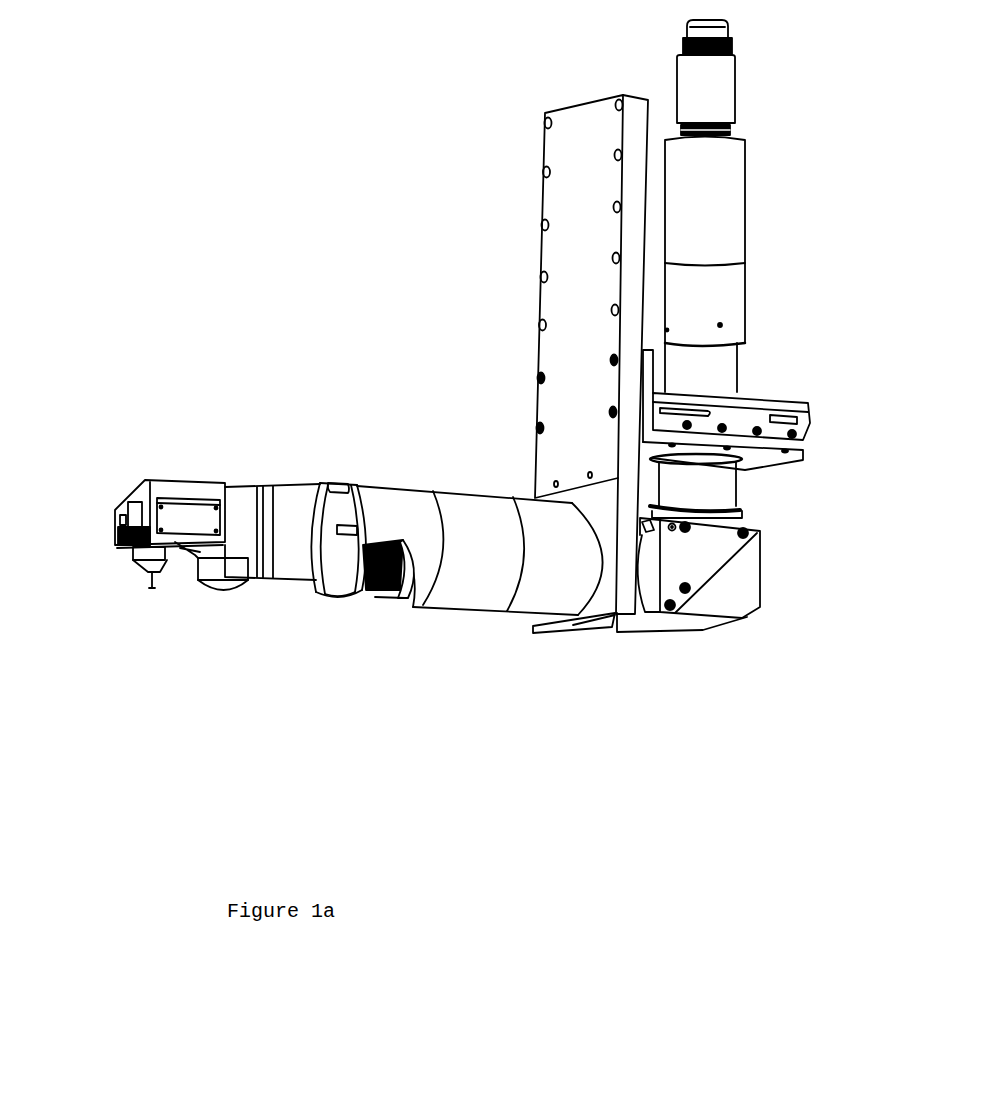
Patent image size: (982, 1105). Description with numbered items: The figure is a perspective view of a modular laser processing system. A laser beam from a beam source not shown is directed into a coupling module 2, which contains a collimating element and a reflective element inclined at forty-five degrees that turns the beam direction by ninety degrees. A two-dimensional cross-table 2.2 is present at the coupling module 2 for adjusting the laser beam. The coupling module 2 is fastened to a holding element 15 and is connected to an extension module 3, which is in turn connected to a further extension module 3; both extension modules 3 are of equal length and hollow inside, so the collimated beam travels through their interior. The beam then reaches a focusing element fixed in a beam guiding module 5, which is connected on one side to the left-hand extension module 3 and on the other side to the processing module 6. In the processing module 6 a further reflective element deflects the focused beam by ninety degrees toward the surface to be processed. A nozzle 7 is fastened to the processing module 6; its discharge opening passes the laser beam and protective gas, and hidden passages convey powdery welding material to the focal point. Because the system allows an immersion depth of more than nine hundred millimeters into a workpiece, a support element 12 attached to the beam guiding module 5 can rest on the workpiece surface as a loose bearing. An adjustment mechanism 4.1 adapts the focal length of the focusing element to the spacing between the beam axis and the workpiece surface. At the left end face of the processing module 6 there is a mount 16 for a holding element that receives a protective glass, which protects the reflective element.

The holding element 15 is at (560, 156).
The coupling module 2 is at (740, 488).
The two-dimensional cross-table 2.2 is at (758, 398).
The extension module 3 is at (472, 513).
The adjustment mechanism 4.1 is at (377, 595).
The beam guiding module 5 is at (323, 483).
The processing module 6 is at (173, 470).
The mount 16 is at (130, 529).
The nozzle 7 is at (135, 567).
The support element 12 is at (237, 593).